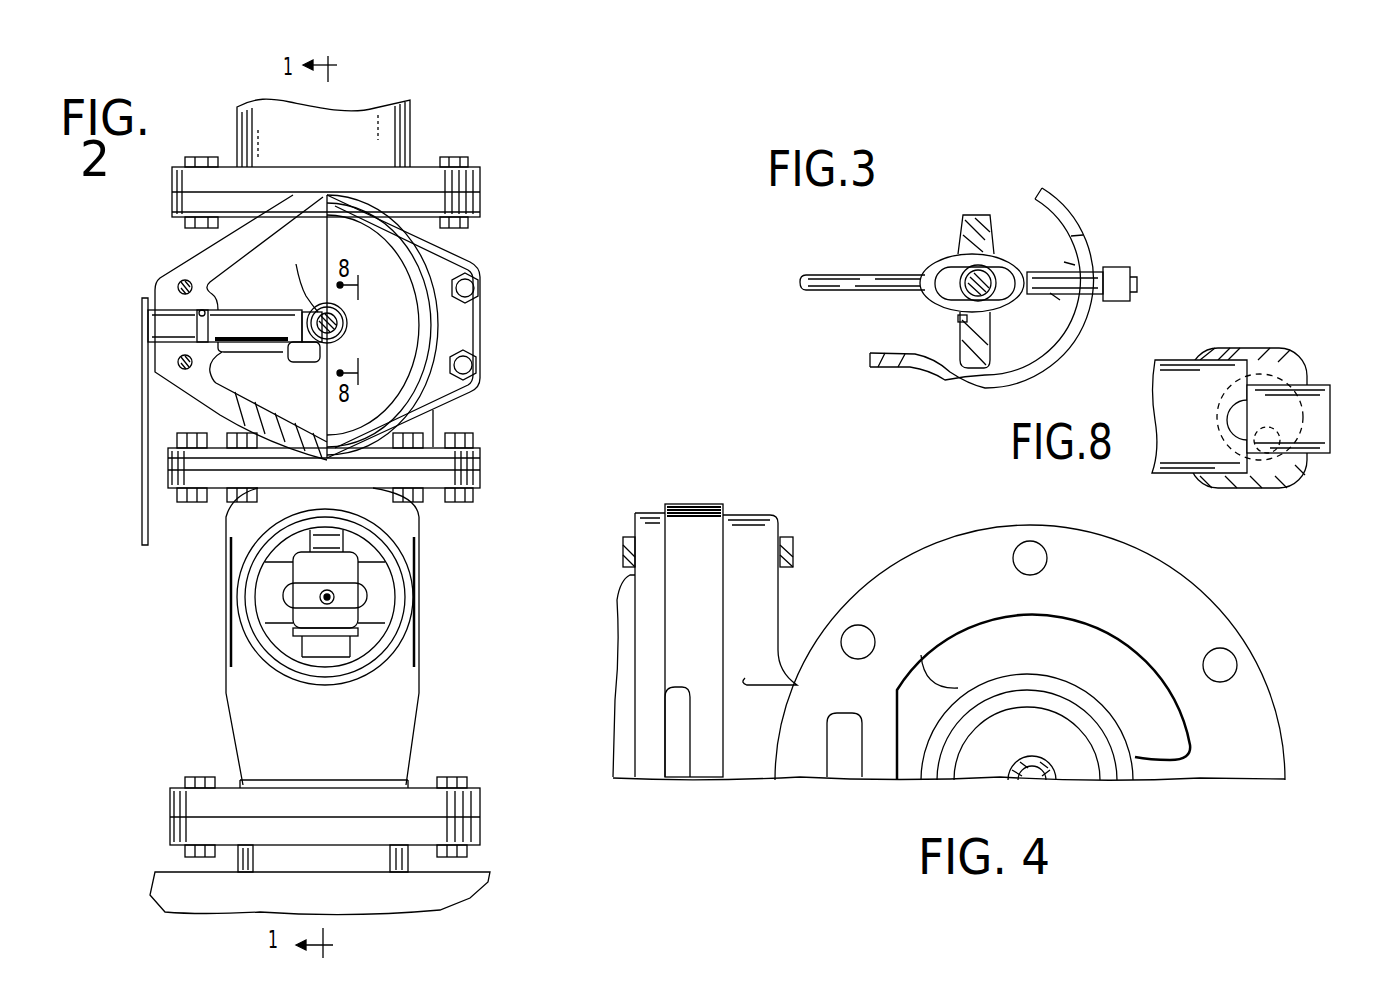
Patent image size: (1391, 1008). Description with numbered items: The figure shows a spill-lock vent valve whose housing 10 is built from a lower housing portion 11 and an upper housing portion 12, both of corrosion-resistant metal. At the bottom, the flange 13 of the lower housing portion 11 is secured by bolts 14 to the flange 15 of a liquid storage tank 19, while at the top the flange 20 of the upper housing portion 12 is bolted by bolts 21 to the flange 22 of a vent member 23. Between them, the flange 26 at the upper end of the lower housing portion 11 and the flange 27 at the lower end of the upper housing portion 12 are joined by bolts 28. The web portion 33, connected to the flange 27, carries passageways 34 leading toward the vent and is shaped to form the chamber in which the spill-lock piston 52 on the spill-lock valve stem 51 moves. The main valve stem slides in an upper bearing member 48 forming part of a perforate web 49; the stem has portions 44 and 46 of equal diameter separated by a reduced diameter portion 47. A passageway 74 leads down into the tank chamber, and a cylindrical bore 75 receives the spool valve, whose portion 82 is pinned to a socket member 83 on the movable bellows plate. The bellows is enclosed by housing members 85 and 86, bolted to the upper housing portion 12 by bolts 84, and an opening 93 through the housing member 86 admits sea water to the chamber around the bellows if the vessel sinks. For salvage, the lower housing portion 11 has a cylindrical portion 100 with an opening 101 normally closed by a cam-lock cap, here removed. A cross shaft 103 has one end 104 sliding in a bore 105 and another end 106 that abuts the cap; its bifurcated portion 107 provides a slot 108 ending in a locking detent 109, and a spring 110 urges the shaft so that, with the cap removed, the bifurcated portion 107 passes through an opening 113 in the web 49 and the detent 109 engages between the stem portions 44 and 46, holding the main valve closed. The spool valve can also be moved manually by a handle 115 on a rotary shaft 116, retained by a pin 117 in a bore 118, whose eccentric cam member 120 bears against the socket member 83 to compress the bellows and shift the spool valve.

In FIG. 2, the housing 10 is at (118, 380).
In FIG. 2, the lower housing portion 11 is at (422, 693).
In FIG. 2, the upper housing portion 12 is at (442, 428).
In FIG. 2, the flange 13 is at (480, 792).
In FIG. 2, the bolts 14 is at (197, 777).
In FIG. 2, the flange 15 is at (480, 830).
In FIG. 2, the liquid storage tank 19 is at (442, 906).
In FIG. 2, the flange 20 is at (483, 212).
In FIG. 2, the bolts 21 is at (205, 157).
In FIG. 2, the flange 22 is at (347, 192).
In FIG. 2, the vent member 23 is at (405, 128).
In FIG. 2, the flange 26 is at (480, 487).
In FIG. 2, the flange 27 is at (480, 462).
In FIG. 4, the flange 27 is at (1268, 737).
In FIG. 2, the bolts 28 is at (205, 501).
In FIG. 4, the web portion 33 is at (932, 700).
In FIG. 4, the passageways 34 is at (1121, 677).
In FIG. 2, the stem portion 44 is at (363, 640).
In FIG. 2, the stem portion 46 is at (338, 542).
In FIG. 3, the reduced diameter portion 47 is at (993, 298).
In FIG. 2, the upper bearing member 48 is at (307, 570).
In FIG. 2, the perforate web 49 is at (380, 585).
In FIG. 4, the spill-lock valve stem 51 is at (1045, 773).
In FIG. 4, the spill-lock piston 52 is at (1043, 754).
In FIG. 4, the passageway 74 is at (842, 775).
In FIG. 2, the cylindrical bore 75 is at (320, 350).
In FIG. 2, the portion of spool valve 82 is at (320, 312).
In FIG. 8, the portion of spool valve 82 is at (1325, 418).
In FIG. 8, the socket member 83 is at (1194, 424).
In FIG. 2, the bolts 84 is at (476, 288).
In FIG. 4, the bolts 84 is at (790, 542).
In FIG. 2, the housing member 85 is at (433, 272).
In FIG. 4, the housing member 85 is at (625, 590).
In FIG. 2, the housing member 86 is at (484, 322).
In FIG. 4, the housing member 86 is at (700, 504).
In FIG. 4, the opening 93 is at (677, 765).
In FIG. 2, the cylindrical portion 100 is at (358, 675).
In FIG. 2, the opening 101 is at (387, 620).
In FIG. 3, the cross shaft 103 is at (808, 292).
In FIG. 3, the end of cross shaft 104 is at (1068, 268).
In FIG. 3, the bore 105 is at (1113, 306).
In FIG. 2, the other end of shaft 106 is at (337, 598).
In FIG. 2, the bifurcated portion 107 is at (307, 596).
In FIG. 3, the bifurcated portion 107 is at (933, 262).
In FIG. 3, the slot 108 is at (948, 270).
In FIG. 3, the locking detent 109 is at (1005, 275).
In FIG. 3, the spring 110 is at (1057, 300).
In FIG. 2, the opening 113 is at (290, 605).
In FIG. 3, the opening 113 is at (957, 319).
In FIG. 2, the handle 115 is at (142, 494).
In FIG. 2, the rotary shaft 116 is at (238, 320).
In FIG. 8, the rotary shaft 116 is at (1257, 378).
In FIG. 2, the pin 117 is at (178, 304).
In FIG. 2, the bore 118 is at (250, 345).
In FIG. 8, the bore 118 is at (1267, 378).
In FIG. 2, the cam member 120 is at (296, 275).
In FIG. 8, the cam member 120 is at (1267, 457).